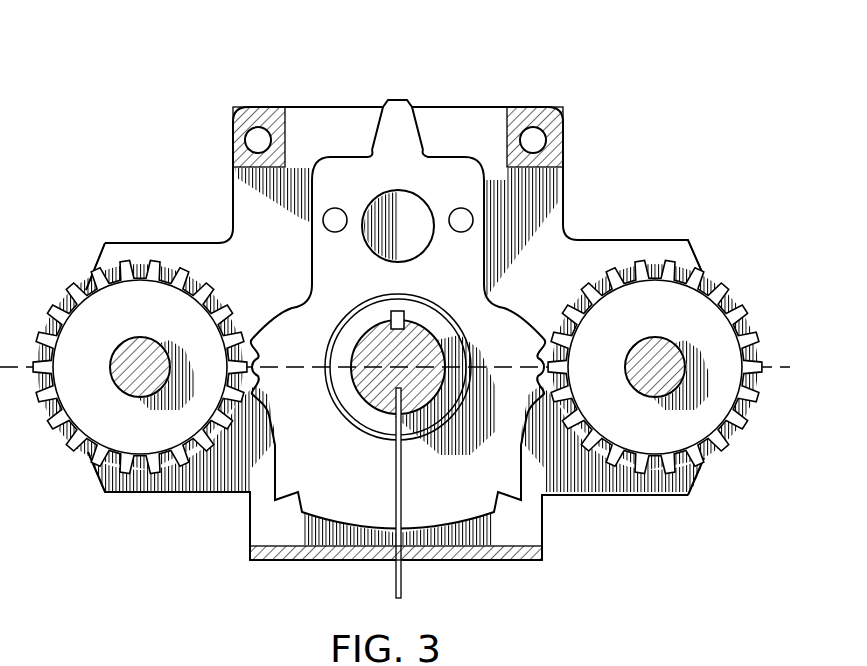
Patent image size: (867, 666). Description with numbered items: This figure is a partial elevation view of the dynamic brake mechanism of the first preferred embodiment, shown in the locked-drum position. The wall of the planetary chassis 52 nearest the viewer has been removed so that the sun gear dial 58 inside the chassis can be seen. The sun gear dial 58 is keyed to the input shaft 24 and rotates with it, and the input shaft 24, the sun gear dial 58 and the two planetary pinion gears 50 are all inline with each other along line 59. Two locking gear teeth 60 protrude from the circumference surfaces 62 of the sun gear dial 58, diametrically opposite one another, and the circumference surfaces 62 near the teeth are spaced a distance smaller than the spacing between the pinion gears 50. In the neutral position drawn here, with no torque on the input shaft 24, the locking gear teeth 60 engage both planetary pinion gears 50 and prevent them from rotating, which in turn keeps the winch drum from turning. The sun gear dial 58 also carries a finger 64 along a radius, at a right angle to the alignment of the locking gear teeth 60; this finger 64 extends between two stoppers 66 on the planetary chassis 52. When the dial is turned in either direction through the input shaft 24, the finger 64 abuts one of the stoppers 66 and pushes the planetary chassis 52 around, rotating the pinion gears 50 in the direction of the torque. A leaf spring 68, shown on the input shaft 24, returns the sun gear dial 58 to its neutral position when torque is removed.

The input shaft 24 is at (365, 402).
The planetary pinion gears 50 is at (148, 292).
The planetary chassis 52 is at (232, 192).
The sun gear dial 58 is at (477, 246).
The line 59 is at (788, 376).
The locking gear teeth 60 is at (240, 310).
The circumference surfaces 62 is at (548, 320).
The finger 64 is at (413, 120).
The stoppers 66 is at (290, 122).
The leaf spring 68 is at (396, 500).